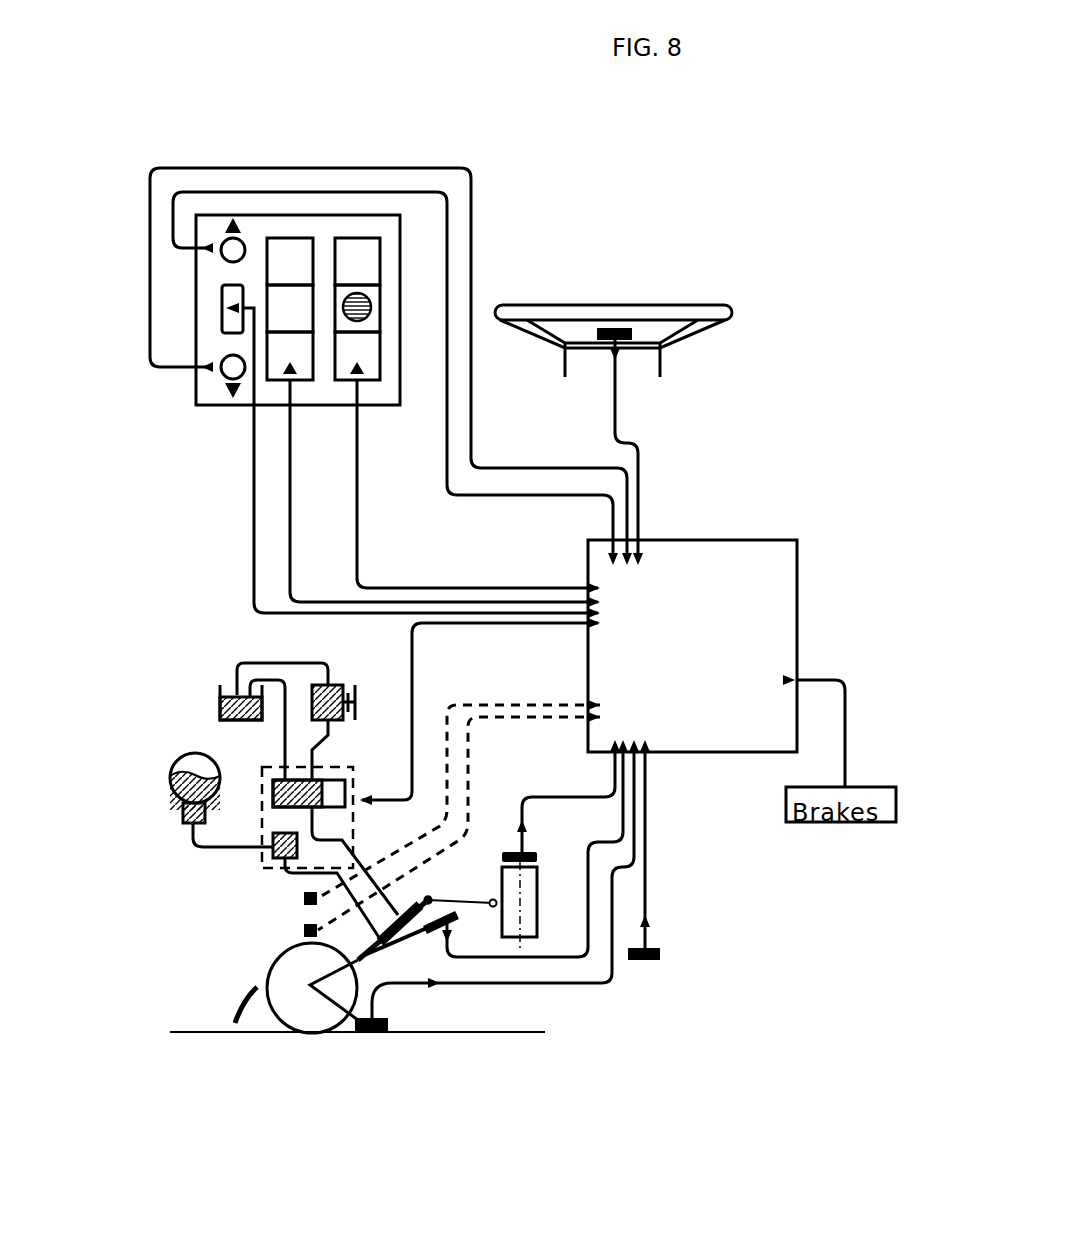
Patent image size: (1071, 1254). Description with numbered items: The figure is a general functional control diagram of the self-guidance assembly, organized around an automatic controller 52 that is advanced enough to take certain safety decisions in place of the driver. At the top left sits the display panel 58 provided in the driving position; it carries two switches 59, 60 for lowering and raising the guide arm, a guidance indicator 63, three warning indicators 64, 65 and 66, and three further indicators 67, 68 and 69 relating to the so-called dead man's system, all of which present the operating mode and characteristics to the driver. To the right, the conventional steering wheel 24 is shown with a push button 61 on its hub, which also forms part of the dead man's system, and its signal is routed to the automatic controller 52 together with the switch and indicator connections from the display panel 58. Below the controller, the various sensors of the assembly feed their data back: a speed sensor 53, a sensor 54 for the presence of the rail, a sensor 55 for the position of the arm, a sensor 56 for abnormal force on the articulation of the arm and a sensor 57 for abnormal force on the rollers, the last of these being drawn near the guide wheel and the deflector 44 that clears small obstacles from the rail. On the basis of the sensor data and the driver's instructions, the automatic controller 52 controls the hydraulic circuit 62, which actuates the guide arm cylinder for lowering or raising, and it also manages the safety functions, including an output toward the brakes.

The steering wheel 24 is at (713, 310).
The deflector 44 is at (215, 997).
The automatic controller 52 is at (798, 575).
The speed sensor 53 is at (660, 954).
The sensor for the presence of the rail 54 is at (386, 1034).
The sensor for the position of the arm 55 is at (458, 927).
The sensor for abnormal force on the articulation of the arm 56 is at (537, 857).
The sensor for abnormal force on the rollers 57 is at (308, 925).
The display panel 58 is at (390, 195).
The switch for lowering and raising the guide arm 59 is at (223, 375).
The switch for lowering and raising the guide arm 60 is at (220, 240).
The push button 61 is at (615, 330).
The hydraulic circuit 62 is at (198, 730).
The guidance indicator 63 is at (222, 297).
The warning indicator 64 is at (282, 258).
The warning indicator 65 is at (295, 305).
The warning indicator 66 is at (296, 352).
The dead man's system indicator 67 is at (382, 258).
The dead man's system indicator 68 is at (382, 313).
The dead man's system indicator 69 is at (373, 352).